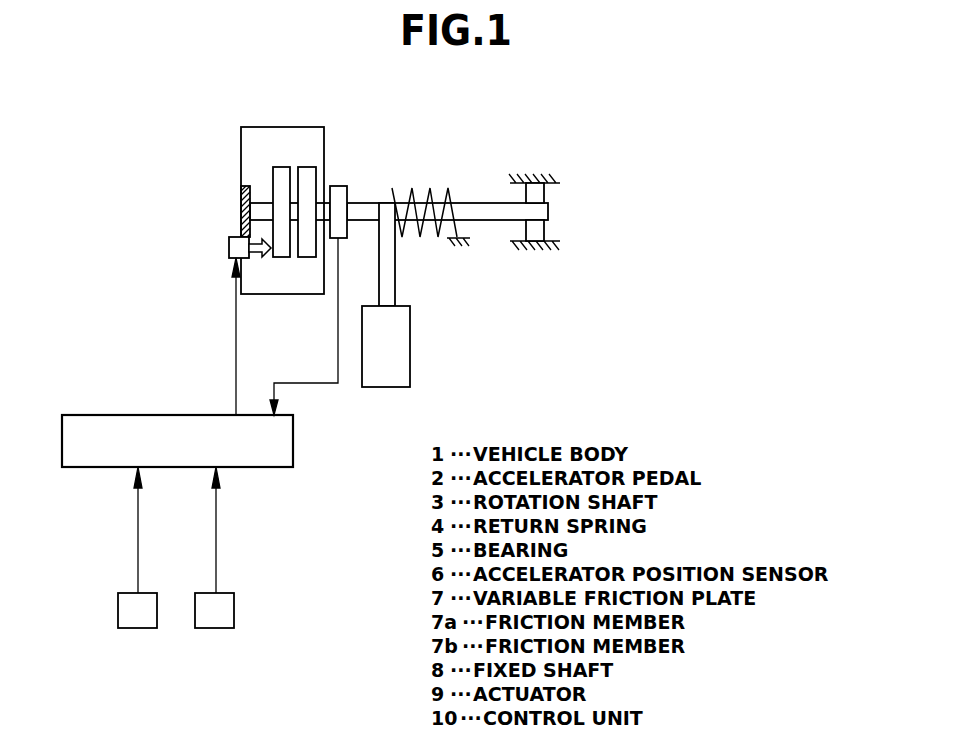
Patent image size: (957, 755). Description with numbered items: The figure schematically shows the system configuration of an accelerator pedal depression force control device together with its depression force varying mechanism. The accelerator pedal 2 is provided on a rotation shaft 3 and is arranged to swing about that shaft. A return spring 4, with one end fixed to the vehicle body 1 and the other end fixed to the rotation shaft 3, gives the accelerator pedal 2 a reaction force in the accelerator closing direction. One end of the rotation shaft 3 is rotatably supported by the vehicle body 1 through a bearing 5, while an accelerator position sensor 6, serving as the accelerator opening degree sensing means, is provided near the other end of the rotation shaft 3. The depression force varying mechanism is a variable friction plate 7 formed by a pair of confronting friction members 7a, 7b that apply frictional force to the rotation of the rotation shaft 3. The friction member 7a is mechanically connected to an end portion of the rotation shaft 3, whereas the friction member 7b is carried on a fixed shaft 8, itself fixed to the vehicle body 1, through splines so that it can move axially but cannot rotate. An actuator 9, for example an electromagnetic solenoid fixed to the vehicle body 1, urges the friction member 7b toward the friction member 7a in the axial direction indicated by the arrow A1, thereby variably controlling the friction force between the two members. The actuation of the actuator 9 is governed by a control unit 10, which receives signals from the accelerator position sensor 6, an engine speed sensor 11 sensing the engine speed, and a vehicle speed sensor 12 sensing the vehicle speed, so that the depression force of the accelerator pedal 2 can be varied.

The vehicle body 1 is at (241, 204).
The accelerator pedal 2 is at (395, 292).
The rotation shaft 3 is at (480, 210).
The return spring 4 is at (415, 188).
The bearing 5 is at (536, 232).
The accelerator position sensor 6 is at (340, 195).
The variable friction plate 7 is at (300, 296).
The friction member 7a is at (304, 166).
The friction member 7b is at (278, 166).
The fixed shaft 8 is at (263, 205).
The actuator 9 is at (229, 247).
The control unit 10 is at (293, 441).
The engine speed sensor 11 is at (137, 547).
The vehicle speed sensor 12 is at (214, 547).
The arrow A1 is at (257, 262).